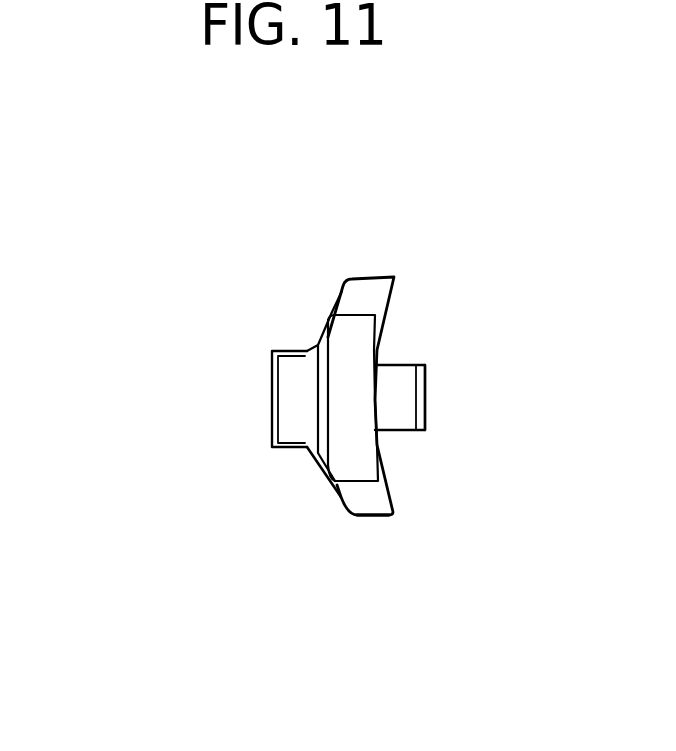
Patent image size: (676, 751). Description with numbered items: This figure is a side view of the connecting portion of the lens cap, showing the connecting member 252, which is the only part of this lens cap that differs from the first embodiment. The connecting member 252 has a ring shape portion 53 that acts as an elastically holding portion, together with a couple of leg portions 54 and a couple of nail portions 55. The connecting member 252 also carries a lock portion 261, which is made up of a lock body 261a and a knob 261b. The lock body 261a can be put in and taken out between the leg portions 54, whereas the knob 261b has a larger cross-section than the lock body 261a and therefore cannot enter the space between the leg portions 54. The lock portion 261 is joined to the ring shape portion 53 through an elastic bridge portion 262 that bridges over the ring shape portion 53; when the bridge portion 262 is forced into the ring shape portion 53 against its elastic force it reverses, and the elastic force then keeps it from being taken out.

The connecting member 252 is at (335, 254).
The bridge portion 262 is at (323, 335).
The lock portion 261 is at (107, 415).
The lock body 261a is at (293, 430).
The knob 261b is at (272, 412).
The ring shape portion 53 is at (367, 508).
The leg portions 54 is at (393, 372).
The nail portions 55 is at (417, 400).